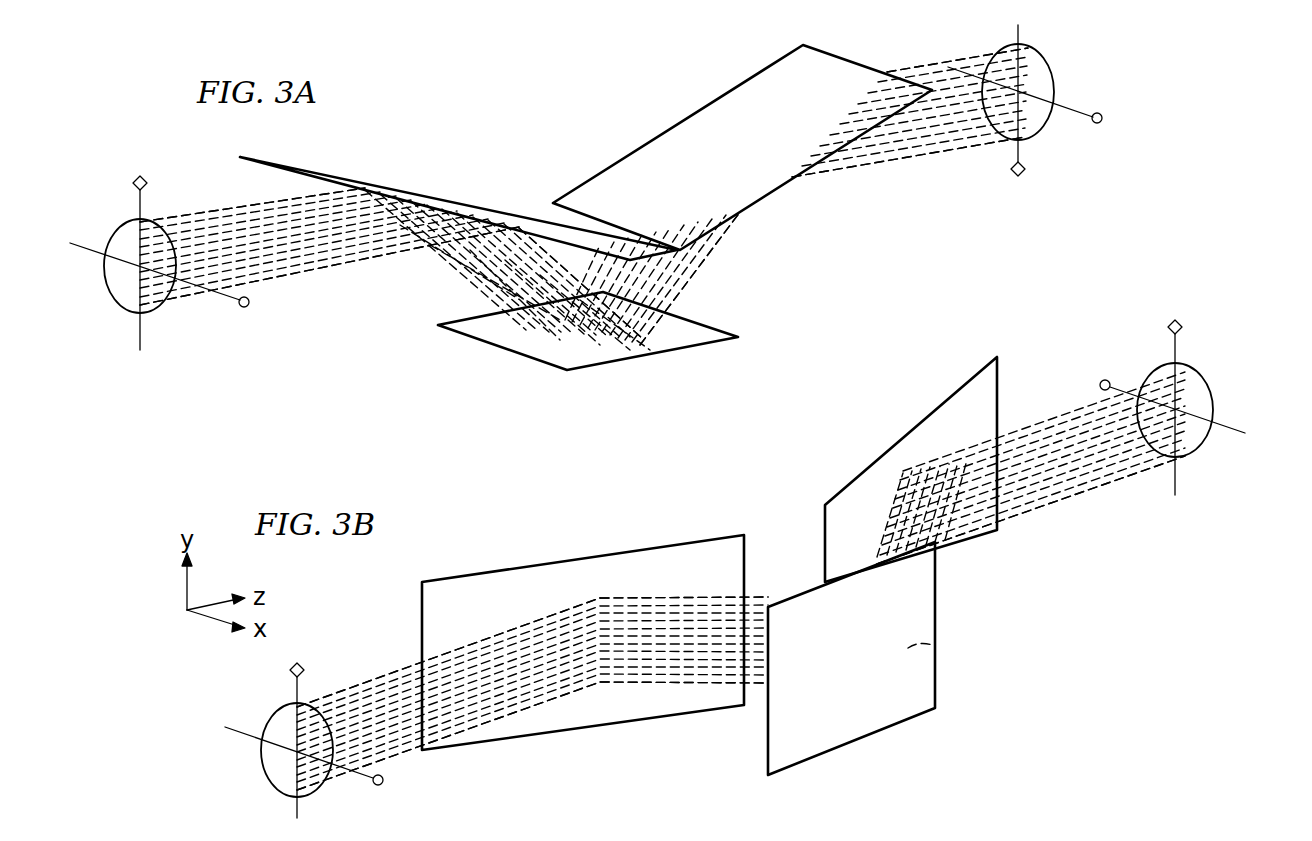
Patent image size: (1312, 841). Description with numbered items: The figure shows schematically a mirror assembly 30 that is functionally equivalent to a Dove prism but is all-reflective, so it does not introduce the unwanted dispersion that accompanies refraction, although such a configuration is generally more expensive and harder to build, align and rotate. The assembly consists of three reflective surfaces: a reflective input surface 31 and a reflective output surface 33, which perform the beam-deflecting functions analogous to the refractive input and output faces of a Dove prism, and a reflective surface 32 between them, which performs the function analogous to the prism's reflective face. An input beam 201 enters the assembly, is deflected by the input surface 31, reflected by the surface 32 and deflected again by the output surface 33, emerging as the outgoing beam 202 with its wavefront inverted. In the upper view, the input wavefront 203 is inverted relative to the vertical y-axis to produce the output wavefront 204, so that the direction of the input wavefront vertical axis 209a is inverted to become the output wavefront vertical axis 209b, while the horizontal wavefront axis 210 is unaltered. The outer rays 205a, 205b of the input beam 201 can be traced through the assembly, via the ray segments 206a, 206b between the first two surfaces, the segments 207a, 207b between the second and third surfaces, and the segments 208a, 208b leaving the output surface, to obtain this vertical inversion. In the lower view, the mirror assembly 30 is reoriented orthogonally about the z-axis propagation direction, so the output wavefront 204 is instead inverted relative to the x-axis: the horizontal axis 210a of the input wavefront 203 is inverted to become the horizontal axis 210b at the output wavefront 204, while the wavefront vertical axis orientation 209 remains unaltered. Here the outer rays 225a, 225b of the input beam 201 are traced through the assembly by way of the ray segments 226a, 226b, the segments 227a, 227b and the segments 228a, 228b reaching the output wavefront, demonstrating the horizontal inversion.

In FIG. 3A, the mirror assembly 30 is at (586, 207).
In FIG. 3B, the mirror assembly 30 is at (709, 566).
In FIG. 3A, the reflective input surface 31 is at (392, 189).
In FIG. 3B, the reflective input surface 31 is at (515, 566).
In FIG. 3A, the reflective surface 32 is at (698, 322).
In FIG. 3B, the reflective surface 32 is at (937, 690).
In FIG. 3A, the reflective output surface 33 is at (690, 117).
In FIG. 3B, the reflective output surface 33 is at (905, 436).
In FIG. 3A, the input beam 201 is at (329, 237).
In FIG. 3B, the input beam 201 is at (548, 674).
In FIG. 3A, the emergent light beam 202 is at (910, 128).
In FIG. 3A, the input wavefront 203 is at (125, 303).
In FIG. 3B, the input wavefront 203 is at (268, 767).
In FIG. 3A, the output wavefront 204 is at (1042, 62).
In FIG. 3B, the output wavefront 204 is at (1188, 372).
In FIG. 3A, the outer ray 205a is at (194, 206).
In FIG. 3A, the outer ray 205b is at (196, 300).
In FIG. 3A, the ray bundle between first and second elements 206a is at (440, 278).
In FIG. 3A, the marginal ray between first and second elements 206b is at (587, 243).
In FIG. 3A, the ray bundle between second and third elements 207a is at (596, 242).
In FIG. 3A, the marginal ray between second and third elements 207b is at (724, 232).
In FIG. 3A, the lower marginal ray of emergent beam 208a is at (833, 175).
In FIG. 3A, the upper marginal ray of emergent beam 208b is at (923, 66).
In FIG. 3B, the wavefront vertical axis orientation 209 is at (292, 691).
In FIG. 3A, the input wavefront vertical axis 209a is at (135, 205).
In FIG. 3A, the output wavefront vertical axis 209b is at (1026, 148).
In FIG. 3A, the horizontal wavefront axis 210 is at (94, 257).
In FIG. 3B, the horizontal axis of input wavefront 210a is at (353, 778).
In FIG. 3B, the horizontal axis at output wavefront 210b is at (1228, 425).
In FIG. 3B, the outer ray 225a is at (337, 690).
In FIG. 3B, the outer ray 225b is at (377, 737).
In FIG. 3B, the lower ray after first element 226a is at (650, 653).
In FIG. 3B, the upper ray after first element 226b is at (753, 627).
In FIG. 3B, the ray bundle at third element 227a is at (940, 540).
In FIG. 3B, the ray trace in second element 227b is at (945, 647).
In FIG. 3B, the upper marginal ray of emergent beam 228a is at (1060, 423).
In FIG. 3B, the lower marginal ray of emergent beam 228b is at (1192, 433).